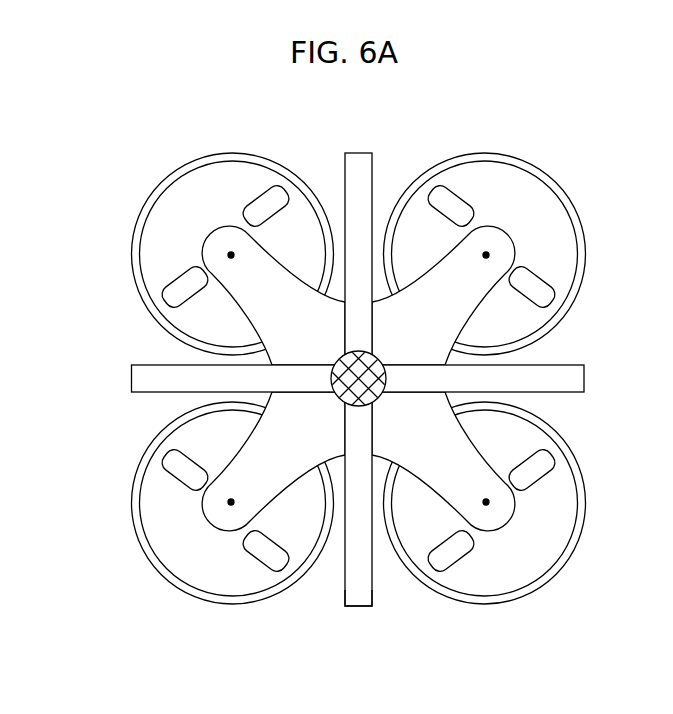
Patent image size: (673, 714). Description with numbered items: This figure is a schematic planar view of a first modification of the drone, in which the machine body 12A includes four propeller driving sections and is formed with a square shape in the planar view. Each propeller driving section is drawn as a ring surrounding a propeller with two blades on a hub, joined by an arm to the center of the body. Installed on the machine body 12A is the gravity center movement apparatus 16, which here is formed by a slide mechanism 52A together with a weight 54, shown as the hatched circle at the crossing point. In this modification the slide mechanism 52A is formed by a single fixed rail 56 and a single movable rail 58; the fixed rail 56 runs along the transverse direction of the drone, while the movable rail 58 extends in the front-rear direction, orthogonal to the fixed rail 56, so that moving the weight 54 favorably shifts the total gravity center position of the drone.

The machine body 12A is at (171, 165).
The slide mechanism 52A is at (378, 142).
The gravity center movement apparatus 16 is at (421, 353).
The weight 54 is at (378, 360).
The fixed rail 56 is at (147, 376).
The movable rail 58 is at (358, 607).